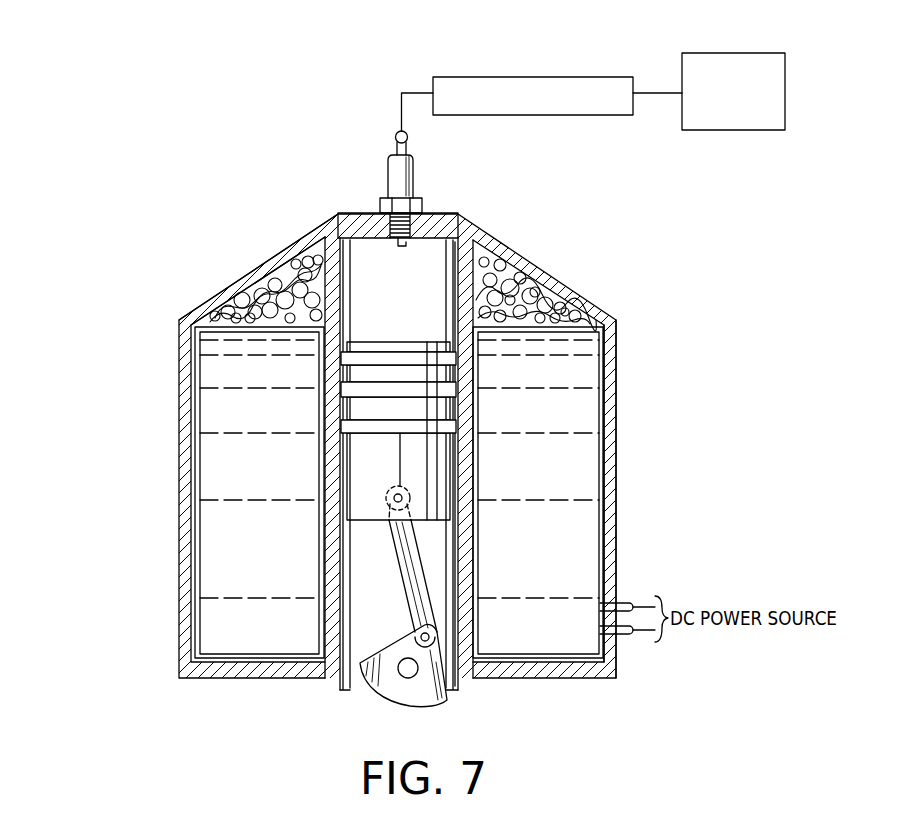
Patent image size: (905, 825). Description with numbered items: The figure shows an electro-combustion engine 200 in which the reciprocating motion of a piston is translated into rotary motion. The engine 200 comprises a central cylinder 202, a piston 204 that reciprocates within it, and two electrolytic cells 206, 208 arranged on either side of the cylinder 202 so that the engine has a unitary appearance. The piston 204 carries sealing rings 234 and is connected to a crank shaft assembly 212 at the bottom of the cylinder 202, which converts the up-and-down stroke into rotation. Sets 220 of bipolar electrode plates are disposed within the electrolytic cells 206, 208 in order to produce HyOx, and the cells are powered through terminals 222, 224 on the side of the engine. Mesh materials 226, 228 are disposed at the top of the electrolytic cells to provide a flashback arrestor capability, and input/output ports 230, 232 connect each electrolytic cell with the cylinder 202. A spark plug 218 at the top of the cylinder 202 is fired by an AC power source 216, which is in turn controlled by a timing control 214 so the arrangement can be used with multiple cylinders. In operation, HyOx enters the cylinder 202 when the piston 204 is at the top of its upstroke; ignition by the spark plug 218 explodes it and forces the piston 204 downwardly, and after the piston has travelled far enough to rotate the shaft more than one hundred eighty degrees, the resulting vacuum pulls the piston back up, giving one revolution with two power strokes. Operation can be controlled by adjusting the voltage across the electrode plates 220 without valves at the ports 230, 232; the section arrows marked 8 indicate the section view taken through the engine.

The engine 200 is at (176, 600).
The cylinder 202 is at (345, 305).
The piston 204 is at (350, 476).
The electrolytic cell 206 is at (273, 660).
The electrolytic cell 208 is at (517, 660).
The crank shaft assembly 212 is at (385, 703).
The timing control 214 is at (720, 53).
The AC power source 216 is at (523, 77).
The spark plug 218 is at (412, 175).
The sets of bipolar electrode plates 220 is at (612, 520).
The terminal 222 is at (630, 603).
The terminal 224 is at (631, 634).
The mesh material 226 is at (473, 248).
The mesh material 228 is at (535, 313).
The input/output port 230 is at (327, 245).
The input/output port 232 is at (462, 237).
The sealing rings 234 is at (350, 394).
The section line 8- 8 is at (30, 253).